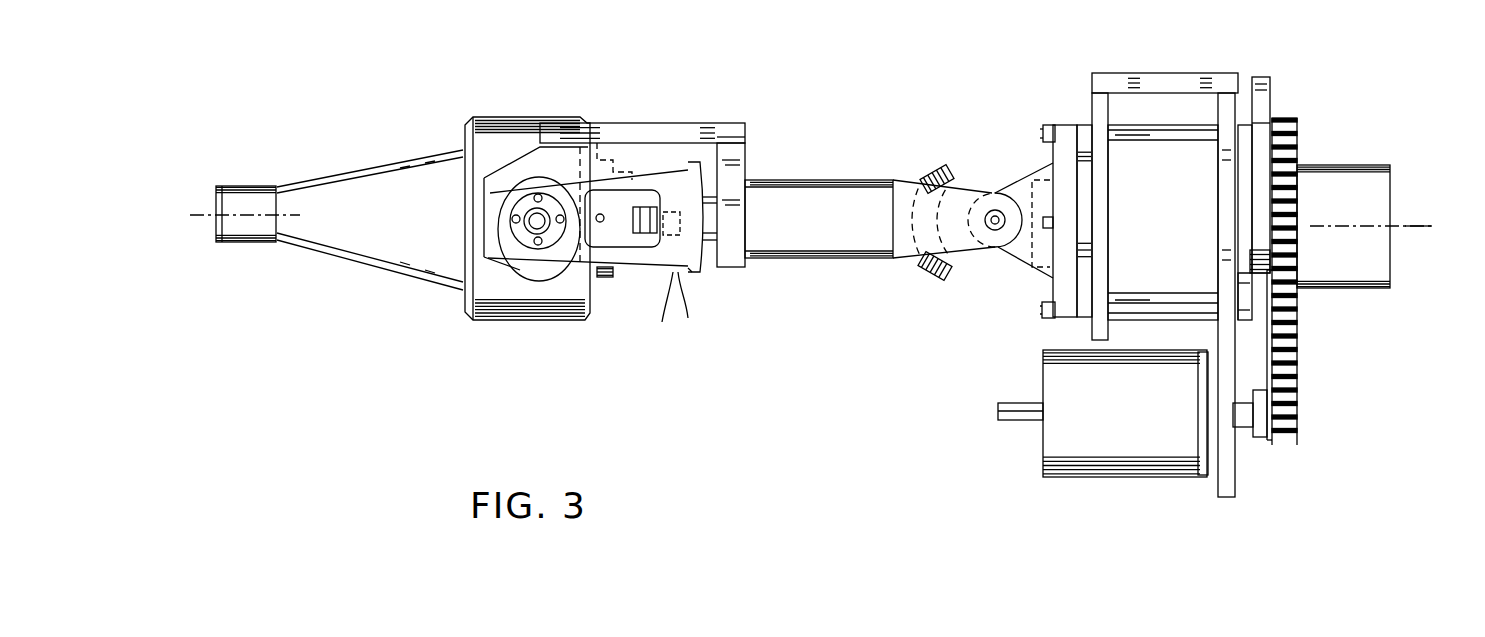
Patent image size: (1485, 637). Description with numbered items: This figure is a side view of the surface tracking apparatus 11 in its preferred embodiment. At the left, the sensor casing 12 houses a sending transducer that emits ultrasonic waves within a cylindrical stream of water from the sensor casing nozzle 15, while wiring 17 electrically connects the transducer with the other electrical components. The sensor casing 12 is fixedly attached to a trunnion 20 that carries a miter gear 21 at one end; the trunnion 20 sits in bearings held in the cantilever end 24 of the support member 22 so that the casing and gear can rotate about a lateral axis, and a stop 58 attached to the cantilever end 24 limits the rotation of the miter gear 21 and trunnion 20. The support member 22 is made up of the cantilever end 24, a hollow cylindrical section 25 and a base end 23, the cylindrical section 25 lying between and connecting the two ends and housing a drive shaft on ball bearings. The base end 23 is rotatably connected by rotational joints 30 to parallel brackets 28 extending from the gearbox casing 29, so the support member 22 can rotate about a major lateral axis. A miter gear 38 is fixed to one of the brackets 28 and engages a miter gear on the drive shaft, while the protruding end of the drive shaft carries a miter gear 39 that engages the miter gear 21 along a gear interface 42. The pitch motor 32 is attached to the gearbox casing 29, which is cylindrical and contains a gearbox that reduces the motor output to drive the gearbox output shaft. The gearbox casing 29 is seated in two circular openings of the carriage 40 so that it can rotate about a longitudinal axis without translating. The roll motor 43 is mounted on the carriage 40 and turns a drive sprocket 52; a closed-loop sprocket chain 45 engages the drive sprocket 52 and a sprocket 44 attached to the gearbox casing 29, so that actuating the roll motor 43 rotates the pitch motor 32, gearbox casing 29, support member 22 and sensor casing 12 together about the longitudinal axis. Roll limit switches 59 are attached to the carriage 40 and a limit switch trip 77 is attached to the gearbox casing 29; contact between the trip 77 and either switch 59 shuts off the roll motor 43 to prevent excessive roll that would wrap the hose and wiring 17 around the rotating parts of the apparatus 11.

The sensor casing nozzle 15 is at (267, 188).
The sensor casing 12 is at (499, 117).
The trunnion 20 is at (537, 222).
The miter gear 21 is at (648, 262).
The stop 58 is at (600, 222).
The wiring 17 is at (662, 322).
The gear interface 42 is at (692, 270).
The cantilever end 24 is at (668, 123).
The miter gear 39 is at (700, 268).
The hollow cylindrical section 25 is at (808, 182).
The support member 22 is at (866, 130).
The base end 23 is at (907, 260).
The rotational joints 30 is at (993, 226).
The miter gear 38 is at (946, 178).
The parallel brackets 28 is at (1037, 273).
The surface tracking apparatus 11 is at (825, 303).
The gearbox casing 29 is at (1160, 205).
The carriage 40 is at (1226, 80).
The limit switch trip 77 is at (1273, 100).
The sprocket 44 is at (1300, 136).
The sprocket chain 45 is at (1298, 333).
The pitch motor 32 is at (1350, 287).
The roll motor 43 is at (1043, 385).
The drive sprocket 52 is at (1257, 440).
The roll limit switches 59 is at (1262, 312).